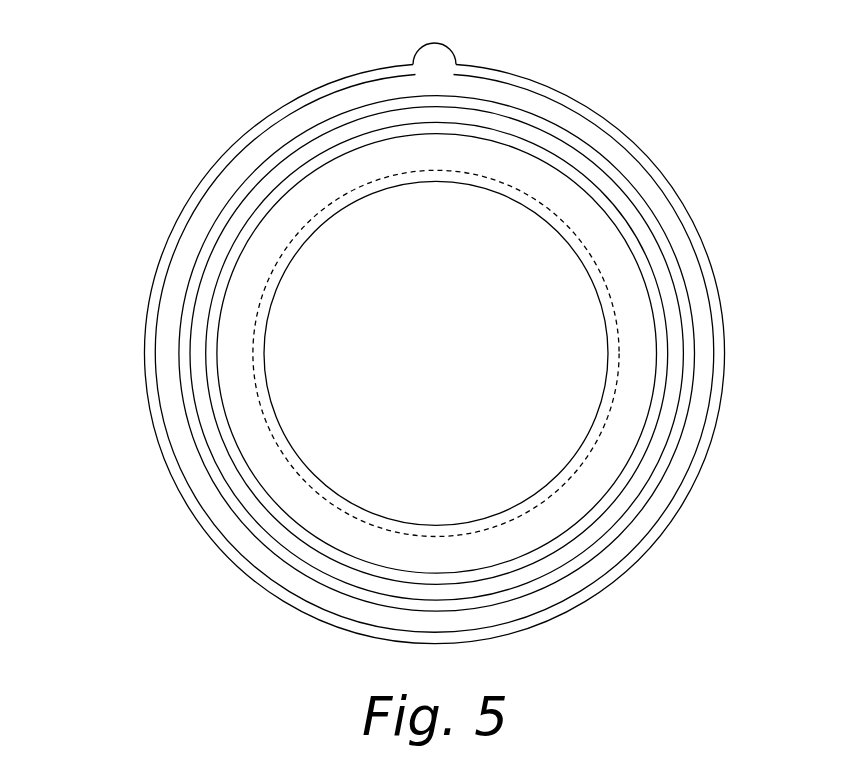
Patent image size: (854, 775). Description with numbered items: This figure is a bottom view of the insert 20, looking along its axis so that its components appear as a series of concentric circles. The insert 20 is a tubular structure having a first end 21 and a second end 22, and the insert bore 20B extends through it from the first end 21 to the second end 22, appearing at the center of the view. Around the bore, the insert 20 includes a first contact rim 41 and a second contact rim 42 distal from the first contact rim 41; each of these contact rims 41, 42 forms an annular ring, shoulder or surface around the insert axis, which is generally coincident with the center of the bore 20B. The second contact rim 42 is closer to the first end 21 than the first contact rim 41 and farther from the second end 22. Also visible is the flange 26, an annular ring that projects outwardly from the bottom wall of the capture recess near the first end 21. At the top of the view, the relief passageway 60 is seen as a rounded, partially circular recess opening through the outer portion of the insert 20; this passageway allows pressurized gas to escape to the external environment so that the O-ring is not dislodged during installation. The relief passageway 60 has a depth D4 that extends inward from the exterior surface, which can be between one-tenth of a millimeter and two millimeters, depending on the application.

The insert 20 is at (394, 339).
The insert bore 20B is at (418, 301).
The first end 21 is at (608, 260).
The second end 22 is at (535, 168).
The flange 26 is at (250, 480).
The first contact rim 41 is at (295, 602).
The second contact rim 42 is at (183, 402).
The relief passageway 60 is at (442, 73).
The depth D4 is at (423, 122).